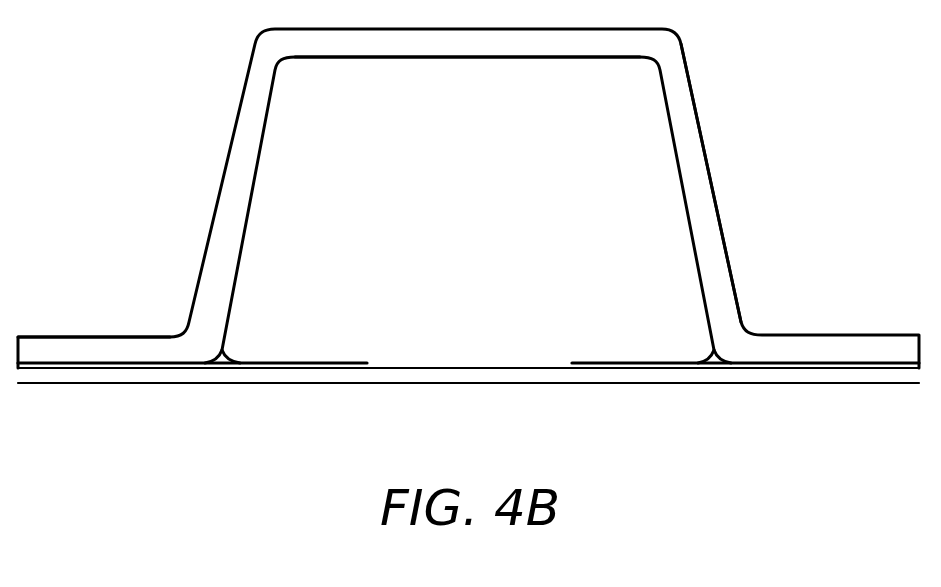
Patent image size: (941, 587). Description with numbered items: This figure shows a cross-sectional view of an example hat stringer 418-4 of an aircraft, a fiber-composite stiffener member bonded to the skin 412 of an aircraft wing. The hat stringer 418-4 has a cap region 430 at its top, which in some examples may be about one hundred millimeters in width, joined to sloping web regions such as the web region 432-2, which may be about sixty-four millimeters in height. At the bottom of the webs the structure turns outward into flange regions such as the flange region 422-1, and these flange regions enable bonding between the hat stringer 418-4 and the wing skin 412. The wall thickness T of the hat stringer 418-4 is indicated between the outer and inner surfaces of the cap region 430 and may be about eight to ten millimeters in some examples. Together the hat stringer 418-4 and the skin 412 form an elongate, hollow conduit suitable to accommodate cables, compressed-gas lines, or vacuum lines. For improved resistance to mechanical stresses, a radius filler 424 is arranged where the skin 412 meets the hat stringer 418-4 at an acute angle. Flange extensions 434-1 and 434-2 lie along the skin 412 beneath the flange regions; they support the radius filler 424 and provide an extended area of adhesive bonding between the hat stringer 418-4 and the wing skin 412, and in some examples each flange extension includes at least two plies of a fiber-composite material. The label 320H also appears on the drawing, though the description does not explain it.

The hat-shaped metal structure 320H is at (256, 61).
The hat stringer 418-4 is at (500, 239).
The radius filler 424 is at (718, 357).
The cap region 430 is at (650, 89).
The flange region 422-1 is at (185, 305).
The web region 432-2 is at (718, 55).
The skin 412 is at (462, 369).
The flange extension 434-1 is at (262, 366).
The flange extension 434-2 is at (683, 366).
The wall thickness T is at (468, 8).